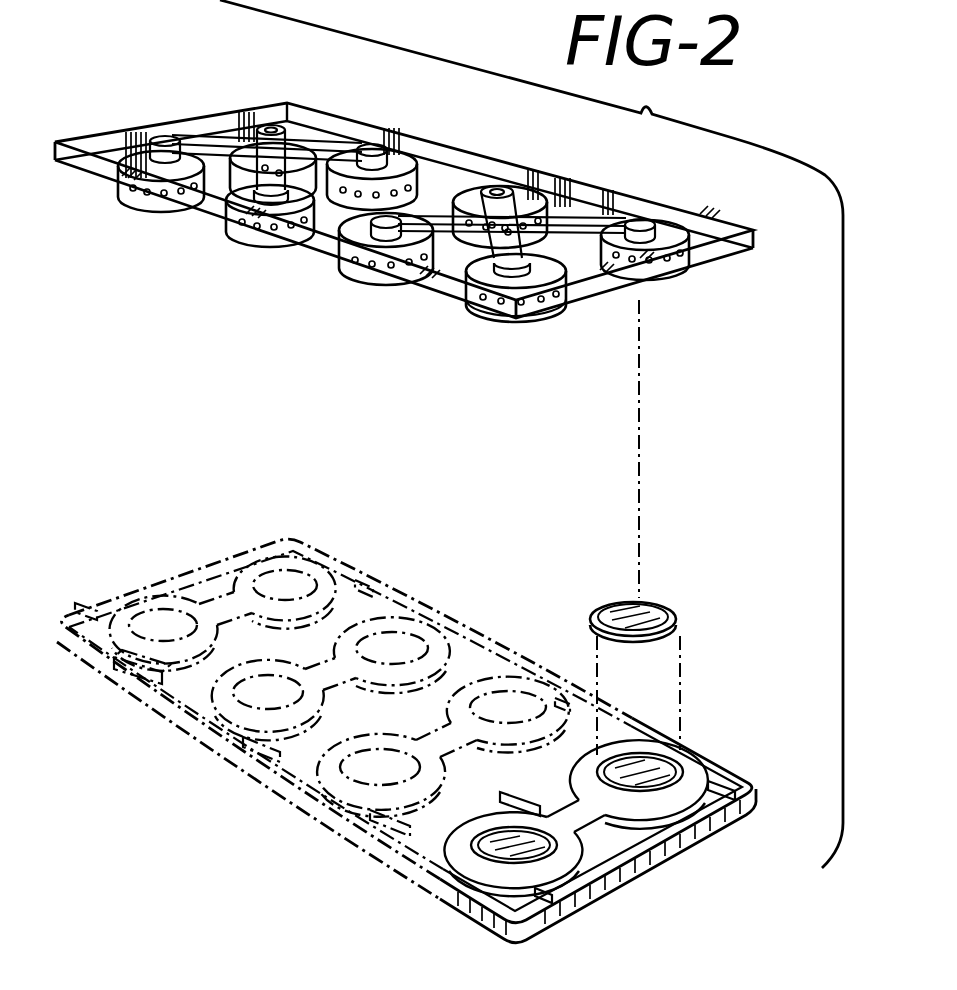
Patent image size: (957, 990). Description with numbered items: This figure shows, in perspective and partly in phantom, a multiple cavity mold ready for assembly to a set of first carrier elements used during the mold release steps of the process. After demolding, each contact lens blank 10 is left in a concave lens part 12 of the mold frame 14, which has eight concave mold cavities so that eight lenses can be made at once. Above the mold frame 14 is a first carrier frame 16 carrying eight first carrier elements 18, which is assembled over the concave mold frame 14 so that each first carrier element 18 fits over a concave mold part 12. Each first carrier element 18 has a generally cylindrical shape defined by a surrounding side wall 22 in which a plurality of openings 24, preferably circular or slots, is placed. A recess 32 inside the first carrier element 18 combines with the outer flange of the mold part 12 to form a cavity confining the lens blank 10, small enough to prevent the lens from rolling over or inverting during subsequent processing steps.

The contact lens blank 10 is at (673, 612).
The concave lens part 12 is at (652, 770).
The mold frame 14 is at (443, 895).
The first carrier frame 16 is at (693, 210).
The first carrier element 18 is at (684, 283).
The surrounding side wall 22 is at (560, 315).
The openings 24 is at (514, 328).
The recess 32 is at (521, 328).